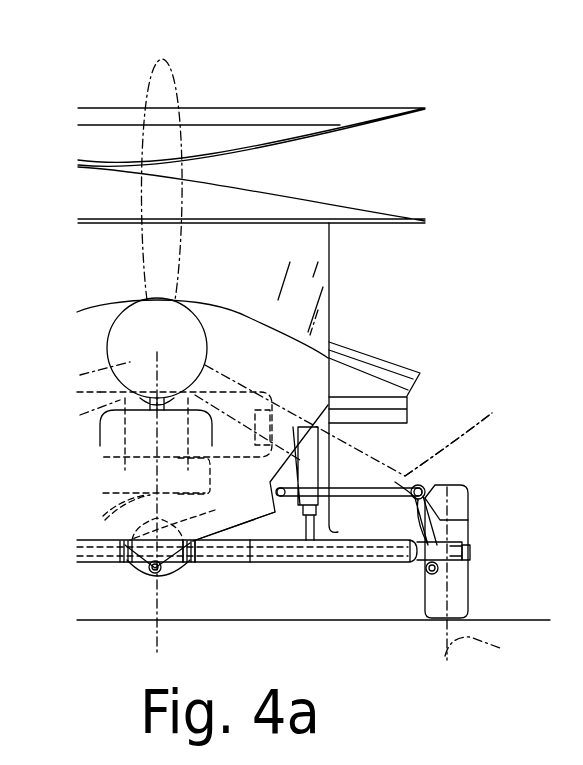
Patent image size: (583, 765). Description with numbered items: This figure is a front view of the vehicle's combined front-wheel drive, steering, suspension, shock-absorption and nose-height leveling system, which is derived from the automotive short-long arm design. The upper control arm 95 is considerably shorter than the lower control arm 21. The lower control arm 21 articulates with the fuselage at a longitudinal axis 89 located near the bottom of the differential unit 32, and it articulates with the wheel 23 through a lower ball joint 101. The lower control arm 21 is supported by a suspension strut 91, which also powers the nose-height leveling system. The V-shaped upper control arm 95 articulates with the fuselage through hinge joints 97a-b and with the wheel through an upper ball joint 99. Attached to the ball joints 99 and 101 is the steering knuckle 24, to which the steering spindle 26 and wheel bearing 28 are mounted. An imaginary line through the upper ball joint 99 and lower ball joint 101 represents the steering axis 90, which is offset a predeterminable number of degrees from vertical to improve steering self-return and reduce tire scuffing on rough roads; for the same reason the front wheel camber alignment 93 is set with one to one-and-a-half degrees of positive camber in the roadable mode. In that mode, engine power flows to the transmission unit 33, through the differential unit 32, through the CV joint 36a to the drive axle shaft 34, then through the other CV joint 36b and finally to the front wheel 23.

The lower control arm 21 is at (305, 563).
The wheel 23 is at (457, 497).
The steering knuckle 24 is at (435, 537).
The steering spindle 26 is at (445, 540).
The wheel bearing 28 is at (468, 553).
The differential unit 32 is at (190, 516).
The transmission unit 33 is at (112, 513).
The drive axle shaft 34 is at (250, 563).
The CV joint 36a is at (193, 563).
The CV joint 36b is at (420, 568).
The longitudinal axis 89 is at (157, 572).
The steering axis 90 is at (486, 420).
The suspension strut 91 is at (303, 440).
The front wheel camber alignment 93 is at (484, 647).
The upper control arm 95 is at (395, 482).
The hinge joints 97a-b is at (276, 497).
The upper ball joint 99 is at (418, 487).
The lower ball joint 101 is at (435, 570).